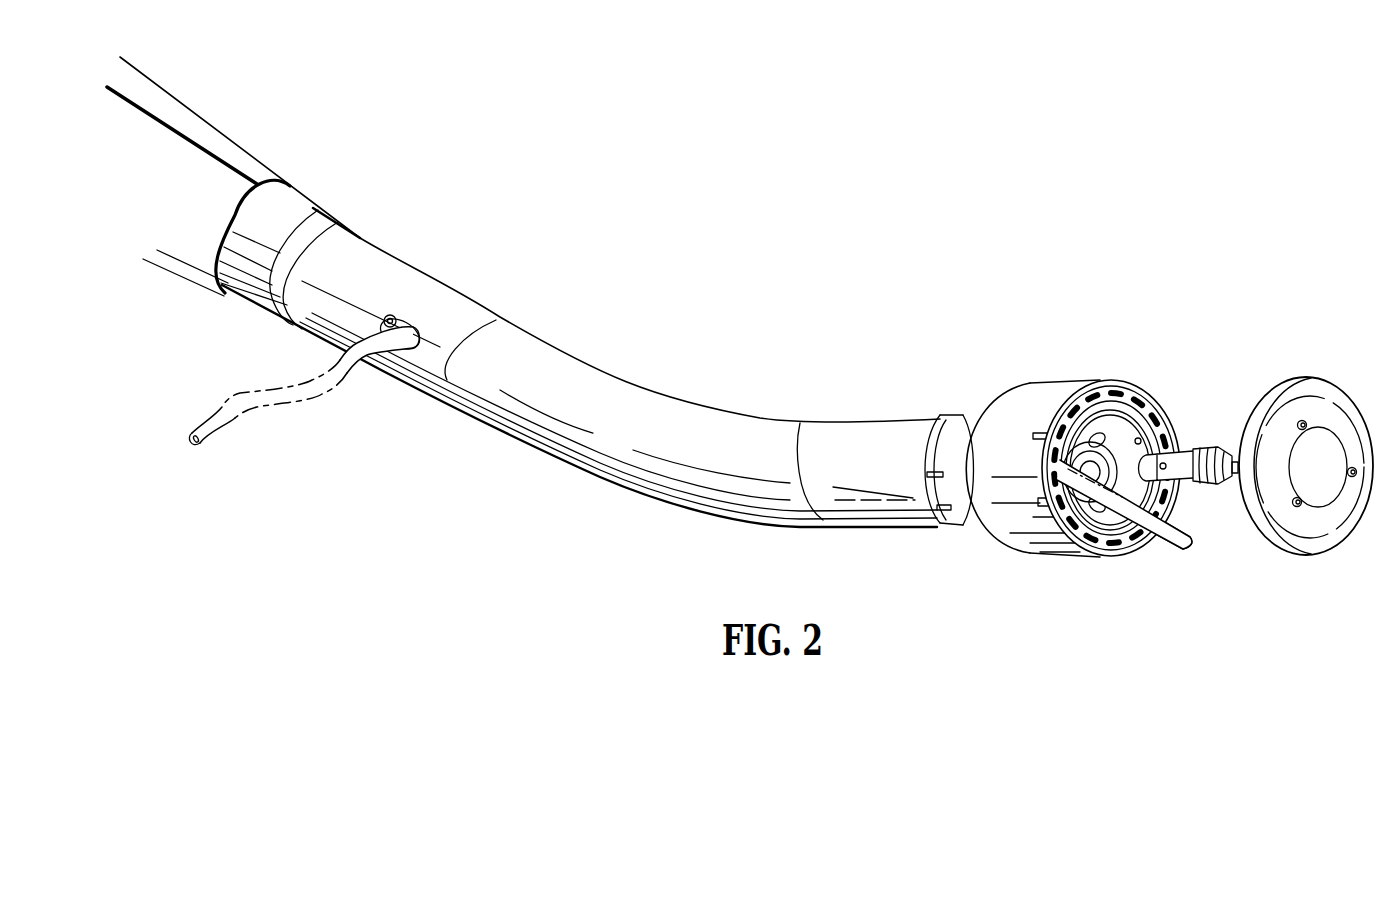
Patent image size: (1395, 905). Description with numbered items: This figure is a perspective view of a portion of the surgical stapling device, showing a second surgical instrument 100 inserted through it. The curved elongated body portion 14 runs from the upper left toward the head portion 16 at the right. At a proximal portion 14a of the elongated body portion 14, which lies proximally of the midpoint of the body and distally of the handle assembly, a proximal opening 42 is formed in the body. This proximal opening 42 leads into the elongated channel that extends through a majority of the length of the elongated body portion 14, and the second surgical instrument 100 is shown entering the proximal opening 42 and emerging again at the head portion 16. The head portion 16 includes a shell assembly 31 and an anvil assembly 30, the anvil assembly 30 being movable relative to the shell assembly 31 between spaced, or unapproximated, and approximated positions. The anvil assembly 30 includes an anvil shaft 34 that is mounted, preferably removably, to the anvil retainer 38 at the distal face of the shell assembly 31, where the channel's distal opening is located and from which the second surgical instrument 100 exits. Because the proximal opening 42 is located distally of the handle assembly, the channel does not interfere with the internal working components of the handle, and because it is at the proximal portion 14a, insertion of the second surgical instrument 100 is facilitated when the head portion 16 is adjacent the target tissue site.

The elongated body portion 14 is at (603, 347).
The proximal portion of elongated body portion 14a is at (403, 238).
The proximal opening 42 is at (395, 318).
The second surgical instrument 100 is at (225, 425).
The head portion 16 is at (1081, 427).
The shell assembly 31 is at (1036, 397).
The anvil retainer 38 is at (1126, 455).
The anvil shaft 34 is at (1185, 455).
The anvil assembly 30 is at (1302, 393).